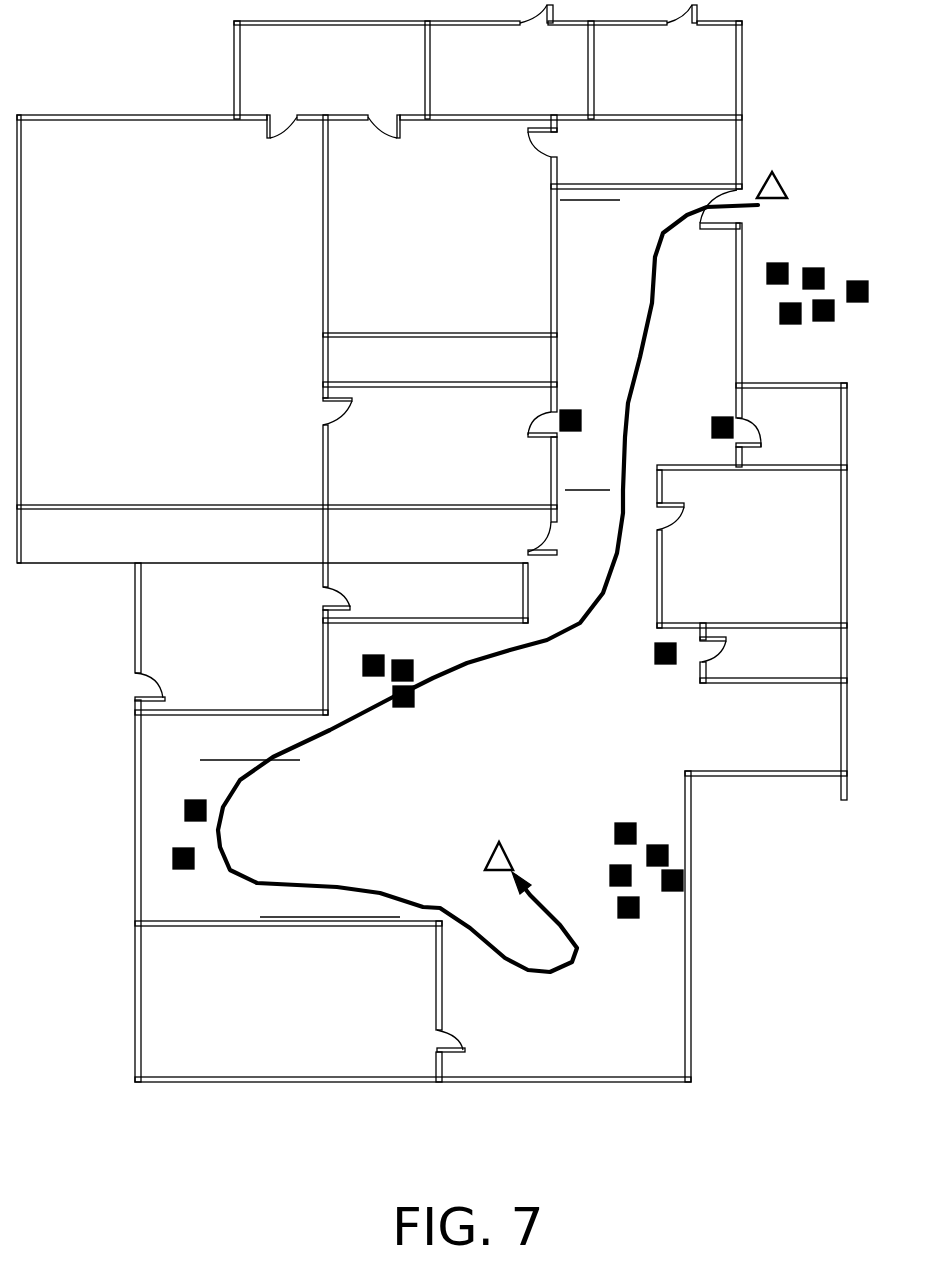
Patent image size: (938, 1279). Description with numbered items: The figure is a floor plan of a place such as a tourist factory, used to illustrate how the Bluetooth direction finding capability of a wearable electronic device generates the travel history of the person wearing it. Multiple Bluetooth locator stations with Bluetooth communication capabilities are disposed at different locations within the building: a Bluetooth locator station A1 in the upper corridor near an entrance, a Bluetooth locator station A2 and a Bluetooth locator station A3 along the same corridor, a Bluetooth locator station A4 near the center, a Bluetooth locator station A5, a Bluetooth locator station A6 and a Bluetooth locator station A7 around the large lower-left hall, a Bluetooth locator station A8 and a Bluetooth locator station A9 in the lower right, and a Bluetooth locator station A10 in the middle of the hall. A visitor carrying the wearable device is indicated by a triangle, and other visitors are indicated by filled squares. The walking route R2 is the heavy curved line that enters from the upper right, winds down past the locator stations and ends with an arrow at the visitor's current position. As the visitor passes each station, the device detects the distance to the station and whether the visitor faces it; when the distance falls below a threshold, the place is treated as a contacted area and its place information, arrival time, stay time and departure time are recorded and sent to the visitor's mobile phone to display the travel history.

The walking route R2 is at (540, 975).
The Bluetooth locator station A1 is at (622, 290).
The Bluetooth locator station A2 is at (622, 433).
The Bluetooth locator station A3 is at (612, 482).
The Bluetooth locator station A4 is at (457, 663).
The Bluetooth locator station A5 is at (278, 748).
The Bluetooth locator station A6 is at (212, 908).
The Bluetooth locator station A7 is at (338, 913).
The Bluetooth locator station A8 is at (622, 951).
The Bluetooth locator station A9 is at (607, 868).
The Bluetooth locator station A10 is at (455, 805).